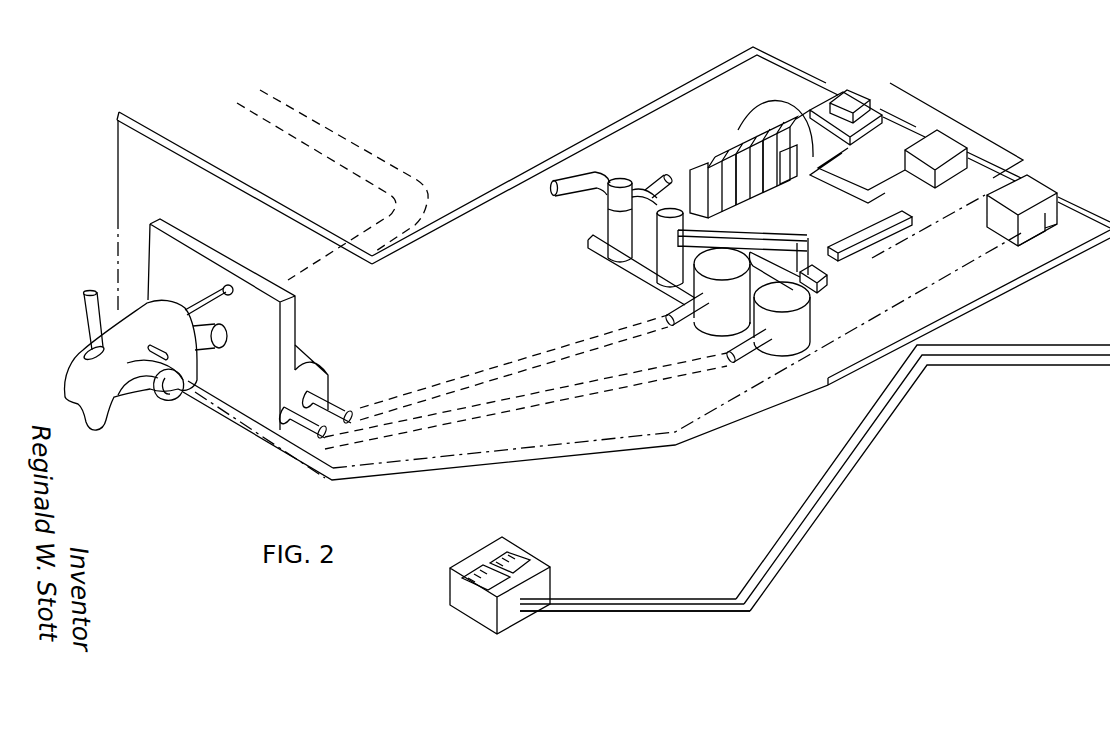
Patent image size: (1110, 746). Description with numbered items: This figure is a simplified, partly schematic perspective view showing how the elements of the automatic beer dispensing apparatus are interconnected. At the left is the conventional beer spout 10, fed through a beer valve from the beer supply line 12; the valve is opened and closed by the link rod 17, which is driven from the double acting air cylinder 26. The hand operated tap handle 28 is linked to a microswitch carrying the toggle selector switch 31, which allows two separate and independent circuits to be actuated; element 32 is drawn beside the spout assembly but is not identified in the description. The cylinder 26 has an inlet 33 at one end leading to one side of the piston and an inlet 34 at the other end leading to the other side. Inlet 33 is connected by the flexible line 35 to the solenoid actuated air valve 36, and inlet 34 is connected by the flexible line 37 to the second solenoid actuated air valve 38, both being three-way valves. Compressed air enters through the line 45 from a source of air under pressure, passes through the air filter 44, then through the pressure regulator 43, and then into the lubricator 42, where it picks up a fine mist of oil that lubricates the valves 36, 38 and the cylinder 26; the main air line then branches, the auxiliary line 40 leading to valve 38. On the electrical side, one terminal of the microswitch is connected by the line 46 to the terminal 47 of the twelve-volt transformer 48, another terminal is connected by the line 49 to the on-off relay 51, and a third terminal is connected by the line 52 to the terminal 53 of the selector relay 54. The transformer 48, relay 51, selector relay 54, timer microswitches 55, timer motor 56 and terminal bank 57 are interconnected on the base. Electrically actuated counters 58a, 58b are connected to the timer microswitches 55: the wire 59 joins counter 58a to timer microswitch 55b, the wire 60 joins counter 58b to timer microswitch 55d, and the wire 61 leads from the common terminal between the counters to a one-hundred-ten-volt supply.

The beer spout 10 is at (102, 418).
The beer supply line 12 is at (211, 343).
The link rod 17 is at (208, 283).
The double acting air cylinder 26 is at (328, 376).
The tap handle 28 is at (88, 295).
The toggle selector switch 31 is at (167, 380).
The slot 32 is at (77, 397).
The inlet 33 is at (330, 404).
The inlet 34 is at (303, 432).
The flexible line 35 is at (452, 384).
The solenoid actuated air valve 36 is at (717, 310).
The flexible line 37 is at (466, 415).
The solenoid actuated air valve 38 is at (786, 345).
The auxiliary line 40 is at (812, 289).
The lubricator 42 is at (668, 277).
The pressure regulator 43 is at (638, 208).
The air filter 44 is at (612, 234).
The line 45 is at (583, 172).
The line 46 is at (244, 187).
The terminal 47 is at (832, 102).
The transformer 48 is at (861, 90).
The line 49 is at (566, 447).
The on-off relay 51 is at (960, 165).
The line 52 is at (590, 452).
The terminal 53 is at (1046, 215).
The selector relay 54 is at (1030, 186).
The timer microswitches 55 is at (707, 144).
The timer microswitch 55b is at (772, 182).
The timer microswitch 55d is at (748, 198).
The timer motor 56 is at (795, 110).
The terminal bank 57 is at (838, 254).
The counter 58a is at (510, 565).
The counter 58b is at (508, 582).
The wire 59 is at (694, 597).
The wire 60 is at (650, 610).
The wire 61 is at (963, 356).